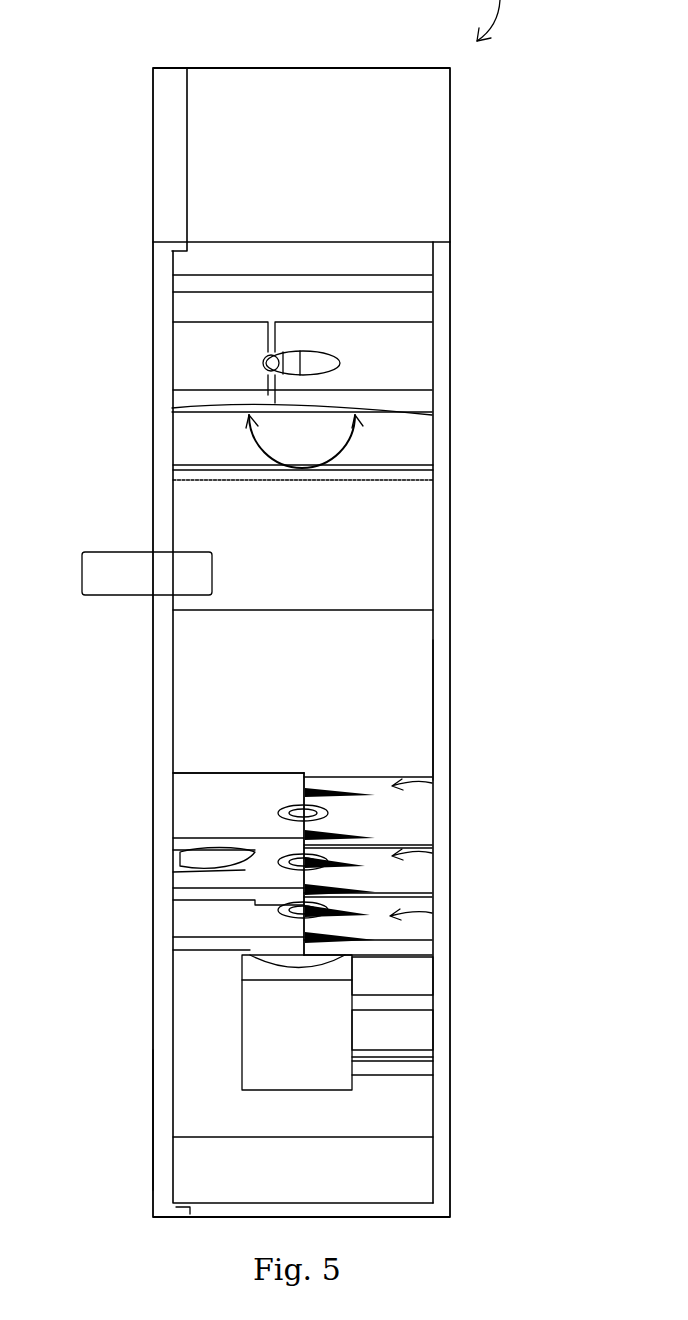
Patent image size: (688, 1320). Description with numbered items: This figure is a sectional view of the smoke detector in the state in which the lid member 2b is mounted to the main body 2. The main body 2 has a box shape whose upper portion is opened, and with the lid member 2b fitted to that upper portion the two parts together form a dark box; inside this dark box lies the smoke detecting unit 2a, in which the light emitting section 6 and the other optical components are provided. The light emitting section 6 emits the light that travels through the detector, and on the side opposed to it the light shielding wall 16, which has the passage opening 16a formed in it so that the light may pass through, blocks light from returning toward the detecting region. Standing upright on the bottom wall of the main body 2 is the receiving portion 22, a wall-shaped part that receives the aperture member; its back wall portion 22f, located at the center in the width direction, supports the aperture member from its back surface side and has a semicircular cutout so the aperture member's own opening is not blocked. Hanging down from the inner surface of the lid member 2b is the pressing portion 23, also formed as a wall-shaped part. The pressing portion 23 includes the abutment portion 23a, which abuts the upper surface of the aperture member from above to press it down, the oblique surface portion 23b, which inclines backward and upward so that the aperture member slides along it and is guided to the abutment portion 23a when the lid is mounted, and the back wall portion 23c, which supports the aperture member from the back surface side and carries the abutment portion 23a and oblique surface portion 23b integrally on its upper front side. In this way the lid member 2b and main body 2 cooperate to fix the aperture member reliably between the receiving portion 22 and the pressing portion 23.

The main body 2 is at (450, 1067).
The smoke detecting unit 2a is at (433, 714).
The lid member 2b is at (153, 1115).
The light shielding wall 16 is at (365, 346).
The passage opening 16a is at (340, 364).
The receiving portion 22 is at (432, 787).
The back wall portion 22f is at (350, 812).
The pressing portion 23 is at (187, 851).
The abutment portion 23a is at (257, 852).
The oblique surface portion 23b is at (245, 870).
The back wall portion 23c is at (247, 810).
The light emitting section 6 is at (352, 1020).